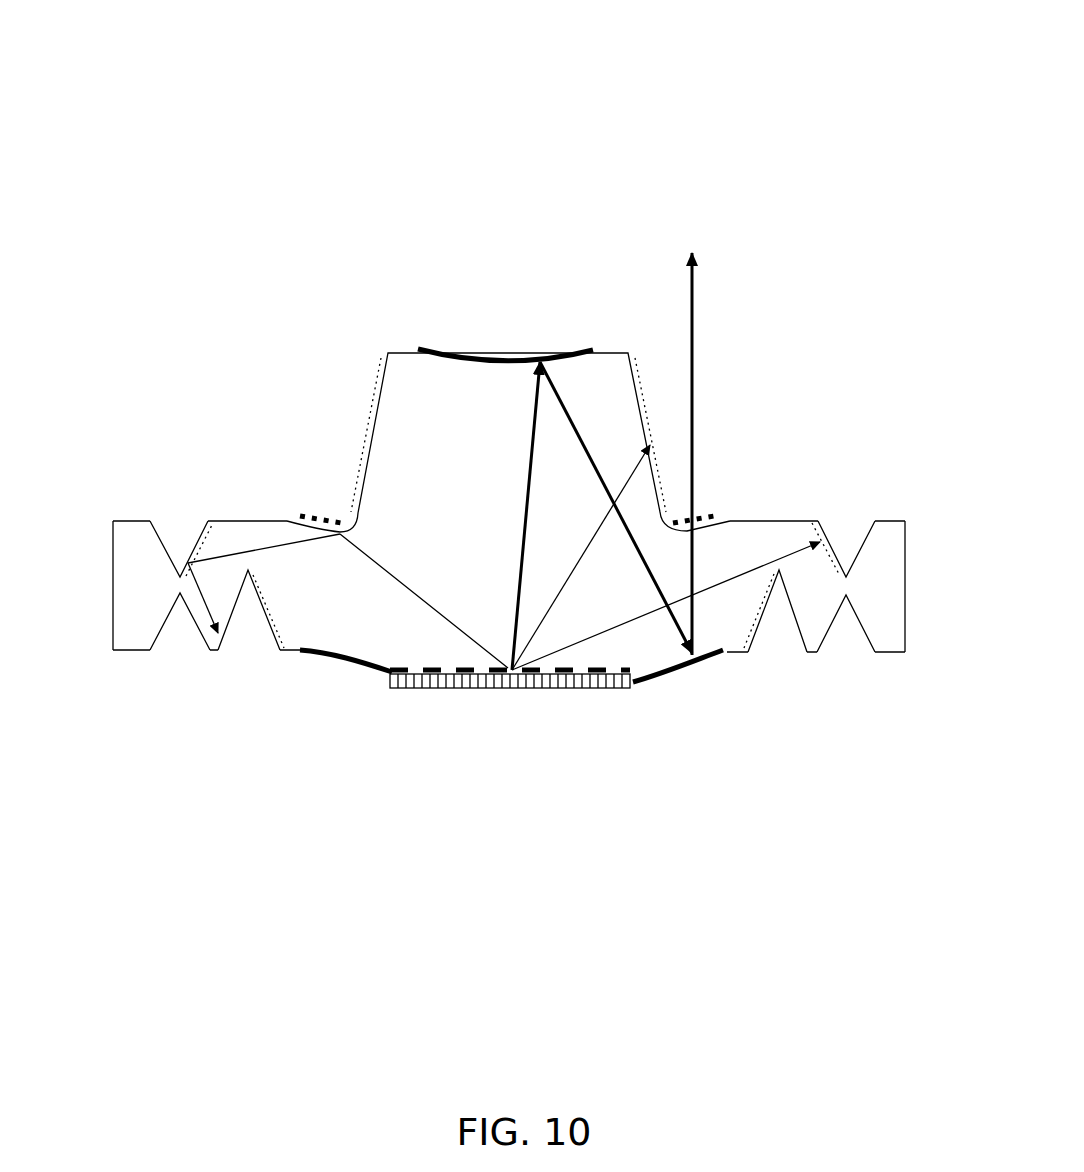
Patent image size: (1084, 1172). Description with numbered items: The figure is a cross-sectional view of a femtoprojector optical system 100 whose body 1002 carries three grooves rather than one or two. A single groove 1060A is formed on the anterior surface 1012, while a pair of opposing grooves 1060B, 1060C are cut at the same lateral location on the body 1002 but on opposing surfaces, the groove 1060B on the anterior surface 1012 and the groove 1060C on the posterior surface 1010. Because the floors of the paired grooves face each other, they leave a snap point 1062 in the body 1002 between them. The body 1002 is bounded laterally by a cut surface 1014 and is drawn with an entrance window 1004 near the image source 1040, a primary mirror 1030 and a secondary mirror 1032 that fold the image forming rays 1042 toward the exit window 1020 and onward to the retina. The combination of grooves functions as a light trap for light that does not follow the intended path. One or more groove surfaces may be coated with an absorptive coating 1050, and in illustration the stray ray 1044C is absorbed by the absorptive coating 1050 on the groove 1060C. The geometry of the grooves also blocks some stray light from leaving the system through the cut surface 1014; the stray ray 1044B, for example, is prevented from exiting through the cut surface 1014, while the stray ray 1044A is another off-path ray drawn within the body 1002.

The femtoprojector optical system 100 is at (322, 118).
The body 1002 is at (500, 510).
The entrance window 1004 is at (440, 665).
The posterior surface 1010 is at (752, 517).
The anterior surface 1012 is at (888, 653).
The cut surface 1014 is at (58, 655).
The exit window 1020 is at (700, 712).
The primary mirror 1030 is at (373, 677).
The secondary mirror 1032 is at (447, 345).
The image source 1040 is at (465, 693).
The image forming rays 1042 is at (563, 388).
The stray ray 1044A is at (555, 612).
The stray ray 1044B is at (262, 553).
The stray ray 1044C is at (600, 638).
The absorptive coating 1050 is at (368, 368).
The groove 1060A is at (252, 640).
The groove 1060B is at (182, 642).
The groove 1060C is at (870, 397).
The snap point 1062 is at (172, 582).